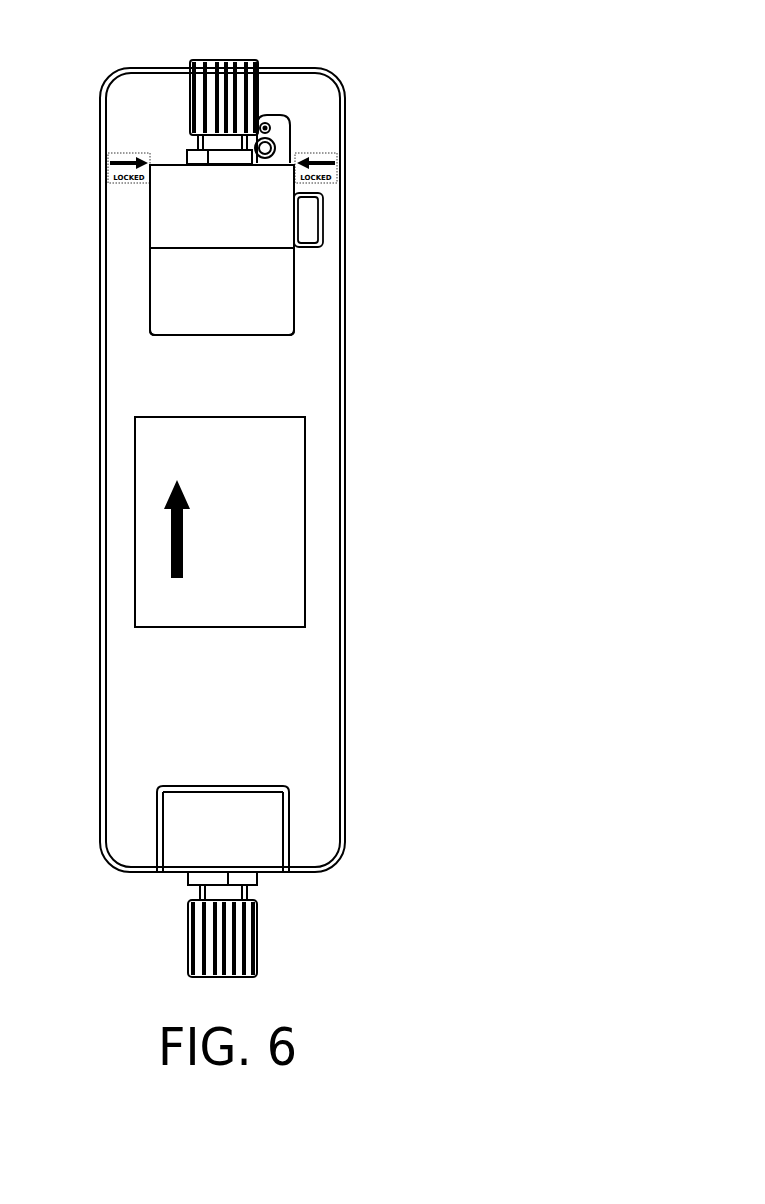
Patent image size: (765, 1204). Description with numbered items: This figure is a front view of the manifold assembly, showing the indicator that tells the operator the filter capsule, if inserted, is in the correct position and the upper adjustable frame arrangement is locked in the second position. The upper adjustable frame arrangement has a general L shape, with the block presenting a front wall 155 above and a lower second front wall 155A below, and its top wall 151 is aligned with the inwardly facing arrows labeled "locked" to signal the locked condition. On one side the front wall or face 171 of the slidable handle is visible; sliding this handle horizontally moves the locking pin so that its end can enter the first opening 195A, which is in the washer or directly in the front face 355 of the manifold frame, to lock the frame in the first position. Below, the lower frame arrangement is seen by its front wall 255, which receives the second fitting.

The top wall 151 is at (167, 163).
The first opening 195A is at (268, 147).
The front wall 155 is at (180, 220).
The lower second front wall 155A is at (257, 295).
The front wall or face of slidable handle 171 is at (315, 213).
The front face 355 is at (325, 482).
The front wall 255 is at (242, 838).